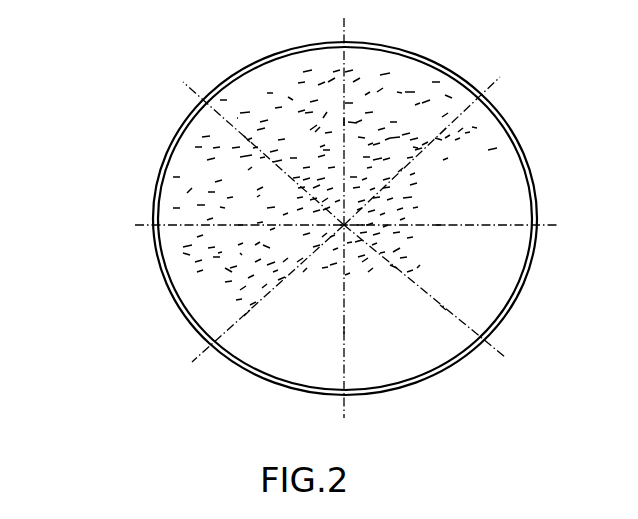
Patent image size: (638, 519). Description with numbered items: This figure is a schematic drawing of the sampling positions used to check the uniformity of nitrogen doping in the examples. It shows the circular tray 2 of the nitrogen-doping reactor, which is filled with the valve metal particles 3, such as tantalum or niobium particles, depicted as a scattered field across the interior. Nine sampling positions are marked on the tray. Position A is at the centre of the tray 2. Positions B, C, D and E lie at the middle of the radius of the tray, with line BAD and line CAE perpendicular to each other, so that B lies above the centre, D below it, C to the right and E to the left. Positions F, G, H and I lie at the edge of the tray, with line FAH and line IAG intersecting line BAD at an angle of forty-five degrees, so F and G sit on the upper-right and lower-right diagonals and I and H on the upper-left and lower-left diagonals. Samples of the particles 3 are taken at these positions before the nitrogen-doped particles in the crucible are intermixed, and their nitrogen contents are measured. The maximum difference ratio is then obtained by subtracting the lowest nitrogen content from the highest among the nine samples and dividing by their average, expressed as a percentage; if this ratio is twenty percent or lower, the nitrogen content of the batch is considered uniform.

The tray 2 is at (168, 140).
The valve metal particles 3 is at (237, 272).
The sampling position A is at (343, 223).
The sampling position B is at (344, 133).
The sampling position C is at (440, 225).
The sampling position D is at (343, 316).
The sampling position E is at (241, 225).
The sampling position F is at (456, 116).
The sampling position G is at (455, 321).
The sampling position H is at (236, 323).
The sampling position I is at (235, 123).